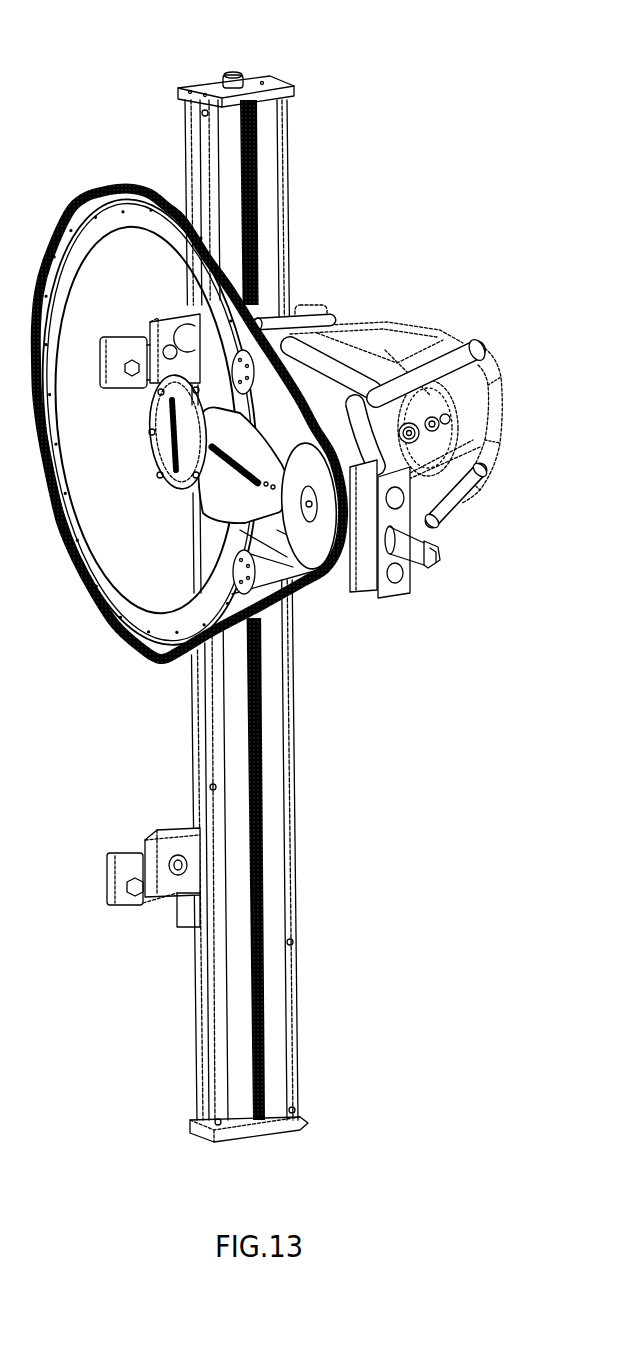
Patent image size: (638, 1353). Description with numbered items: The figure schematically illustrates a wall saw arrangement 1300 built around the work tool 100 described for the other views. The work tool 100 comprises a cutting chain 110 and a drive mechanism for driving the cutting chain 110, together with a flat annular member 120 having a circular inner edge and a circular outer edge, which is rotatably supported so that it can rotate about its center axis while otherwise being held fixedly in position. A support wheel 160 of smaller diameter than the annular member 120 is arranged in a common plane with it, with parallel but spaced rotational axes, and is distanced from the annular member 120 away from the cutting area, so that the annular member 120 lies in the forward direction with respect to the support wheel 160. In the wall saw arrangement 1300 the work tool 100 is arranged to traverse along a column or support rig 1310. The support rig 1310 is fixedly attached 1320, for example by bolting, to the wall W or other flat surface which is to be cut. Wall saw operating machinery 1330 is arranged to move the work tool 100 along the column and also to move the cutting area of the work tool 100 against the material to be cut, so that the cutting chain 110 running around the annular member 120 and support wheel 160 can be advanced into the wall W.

The work tool 100 is at (78, 664).
The cutting chain 110 is at (92, 190).
The annular member 120 is at (118, 210).
The support wheel 160 is at (316, 540).
The wall saw arrangement 1300 is at (384, 89).
The support rig 1310 is at (270, 863).
The fixed attachment 1320 is at (121, 896).
The wall saw operating machinery 1330 is at (397, 358).
The wall W is at (101, 442).